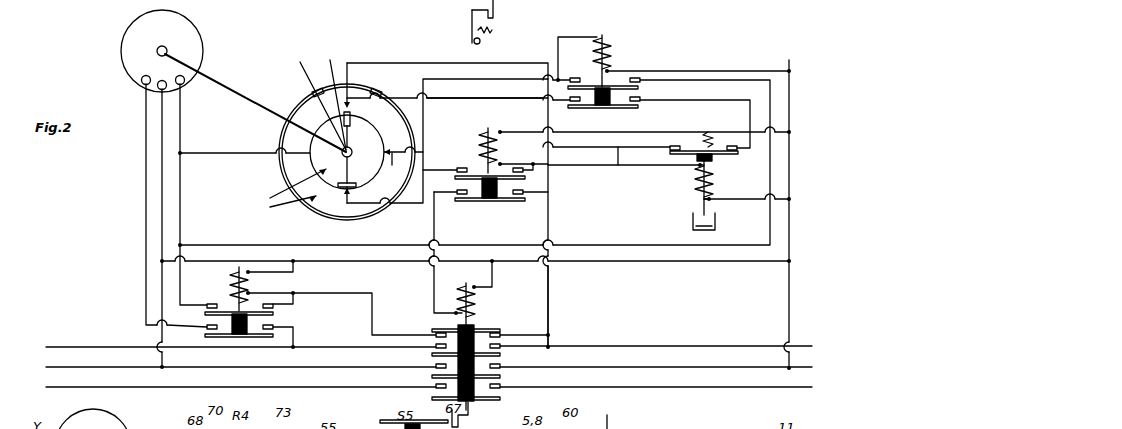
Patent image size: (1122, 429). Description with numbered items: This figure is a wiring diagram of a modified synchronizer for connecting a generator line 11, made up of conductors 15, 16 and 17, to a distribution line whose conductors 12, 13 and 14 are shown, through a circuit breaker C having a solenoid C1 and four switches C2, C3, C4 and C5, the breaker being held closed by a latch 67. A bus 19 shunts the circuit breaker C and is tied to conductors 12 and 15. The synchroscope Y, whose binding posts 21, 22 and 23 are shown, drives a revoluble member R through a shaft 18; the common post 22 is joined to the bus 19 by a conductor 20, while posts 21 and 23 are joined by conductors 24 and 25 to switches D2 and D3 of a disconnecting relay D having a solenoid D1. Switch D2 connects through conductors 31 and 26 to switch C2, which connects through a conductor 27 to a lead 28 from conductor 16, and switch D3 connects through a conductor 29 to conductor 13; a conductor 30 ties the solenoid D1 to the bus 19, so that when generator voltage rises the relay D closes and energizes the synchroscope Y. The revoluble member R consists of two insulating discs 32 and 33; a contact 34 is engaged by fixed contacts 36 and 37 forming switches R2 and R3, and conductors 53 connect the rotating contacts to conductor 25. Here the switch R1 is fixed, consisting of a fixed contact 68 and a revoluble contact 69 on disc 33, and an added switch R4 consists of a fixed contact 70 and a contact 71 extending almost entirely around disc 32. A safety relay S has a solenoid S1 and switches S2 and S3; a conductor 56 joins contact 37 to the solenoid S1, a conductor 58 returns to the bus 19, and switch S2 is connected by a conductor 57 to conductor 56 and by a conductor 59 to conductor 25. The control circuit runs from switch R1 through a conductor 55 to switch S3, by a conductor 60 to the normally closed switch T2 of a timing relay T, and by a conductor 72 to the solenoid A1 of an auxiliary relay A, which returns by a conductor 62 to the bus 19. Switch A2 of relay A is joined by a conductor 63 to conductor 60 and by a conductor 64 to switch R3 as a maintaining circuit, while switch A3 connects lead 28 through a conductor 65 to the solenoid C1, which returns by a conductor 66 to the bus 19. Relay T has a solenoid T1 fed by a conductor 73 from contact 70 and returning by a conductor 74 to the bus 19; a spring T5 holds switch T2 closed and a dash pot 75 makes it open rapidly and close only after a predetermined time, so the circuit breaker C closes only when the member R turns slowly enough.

The synchroscope Y is at (128, 34).
The shaft 18 is at (209, 70).
The binding post 21 is at (143, 77).
The binding post 22 is at (159, 89).
The binding post 23 is at (180, 85).
The conductor 20 is at (162, 143).
The conductor 24 is at (146, 172).
The conductor 25 is at (182, 206).
The conductors 53 is at (200, 153).
The contact 71 is at (290, 106).
The revoluble member R is at (347, 152).
The disc 32 is at (276, 134).
The disc 33 is at (320, 130).
The revoluble contact 69 is at (315, 100).
The fixed contact 68 is at (330, 99).
The fixed contact 70 is at (346, 78).
The switch R4 is at (349, 72).
The switch R1 is at (362, 110).
The switch R2 is at (380, 150).
The fixed contact 37 is at (393, 170).
The contact 34 is at (340, 182).
The switch R3 is at (349, 192).
The fixed contact 36 is at (346, 192).
The conductor 64 is at (409, 205).
The conductor 73 is at (513, 63).
The conductor 55 is at (468, 99).
The auxiliary relay A is at (503, 140).
The solenoid A1 is at (480, 146).
The switch A2 is at (467, 168).
The switch A3 is at (460, 196).
The conductor 65 is at (436, 283).
The conductor 56 is at (531, 82).
The conductor 62 is at (595, 134).
The conductor 63 is at (537, 168).
The conductor 72 is at (618, 166).
The safety relay S is at (612, 56).
The conductor 57 is at (562, 79).
The solenoid S1 is at (612, 67).
The conductor 58 is at (712, 71).
The switch S2 is at (640, 79).
The switch S3 is at (638, 100).
The conductor 60 is at (731, 100).
The conductor 59 is at (763, 80).
The bus 19 is at (790, 100).
The relay T is at (683, 174).
The solenoid T1 is at (713, 176).
The switch T2 is at (685, 146).
The spring T5 is at (713, 141).
The conductor 74 is at (755, 199).
The dash pot 75 is at (716, 226).
The disconnecting relay D is at (232, 298).
The solenoid D1 is at (233, 277).
The conductor 30 is at (278, 274).
The conductor 31 is at (296, 301).
The switch D2 is at (275, 308).
The switch D3 is at (209, 331).
The conductor 29 is at (296, 331).
The conductor 26 is at (372, 316).
The conductor 13 is at (100, 347).
The generator line 11 is at (90, 358).
The conductor 14 is at (120, 386).
The conductor 12 is at (63, 366).
The conductor 15 is at (650, 367).
The conductor 16 is at (683, 346).
The conductor 17 is at (742, 387).
The circuit breaker C is at (486, 319).
The solenoid C1 is at (477, 306).
The conductor 66 is at (497, 266).
The switch C2 is at (436, 330).
The switch C3 is at (500, 345).
The switch C4 is at (433, 368).
The switch C5 is at (500, 390).
The conductor 27 is at (549, 334).
The lead 28 is at (549, 297).
The latch 67 is at (471, 25).